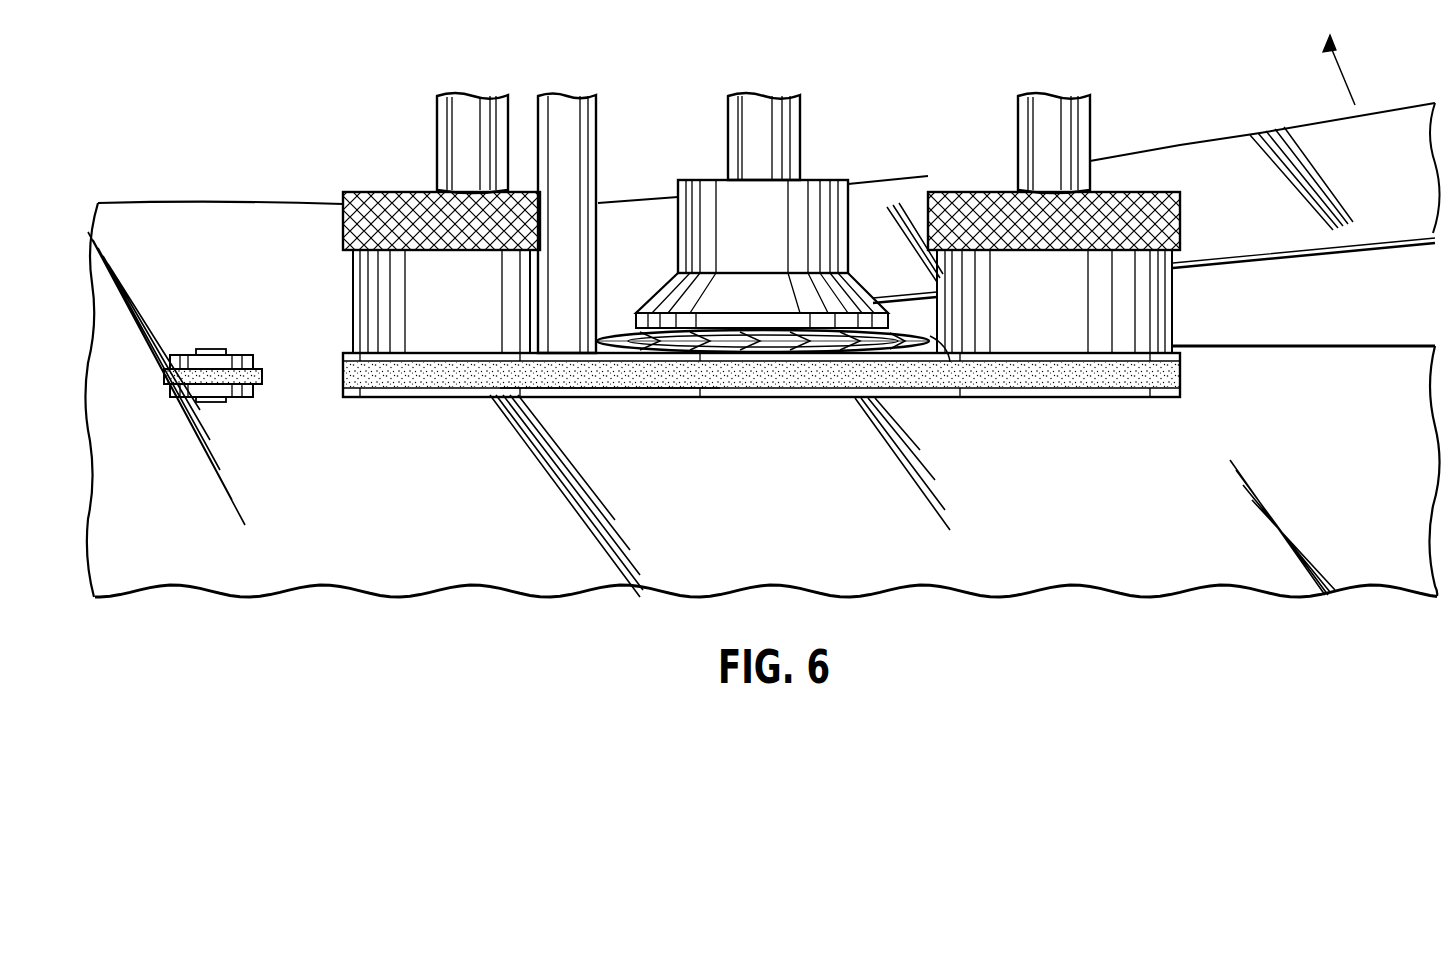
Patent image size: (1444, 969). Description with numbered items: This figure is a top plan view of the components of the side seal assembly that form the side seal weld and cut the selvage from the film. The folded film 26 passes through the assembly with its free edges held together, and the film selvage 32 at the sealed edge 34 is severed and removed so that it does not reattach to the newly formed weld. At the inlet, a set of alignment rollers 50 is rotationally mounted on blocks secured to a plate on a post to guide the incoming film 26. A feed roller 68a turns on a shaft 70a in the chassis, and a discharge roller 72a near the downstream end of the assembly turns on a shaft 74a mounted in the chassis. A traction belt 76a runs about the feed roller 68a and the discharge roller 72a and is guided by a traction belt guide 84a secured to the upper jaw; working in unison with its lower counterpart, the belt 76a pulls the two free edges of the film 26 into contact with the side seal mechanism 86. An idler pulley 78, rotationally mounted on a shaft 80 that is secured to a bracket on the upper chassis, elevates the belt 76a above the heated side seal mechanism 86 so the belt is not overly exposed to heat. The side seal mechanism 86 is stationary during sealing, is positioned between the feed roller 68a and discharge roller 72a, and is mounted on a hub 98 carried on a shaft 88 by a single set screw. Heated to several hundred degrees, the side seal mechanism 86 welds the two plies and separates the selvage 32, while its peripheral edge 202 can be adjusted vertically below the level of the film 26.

The film 26 is at (352, 492).
The film selvage 32 is at (1389, 121).
The sealed edge 34 is at (1297, 345).
The alignment rollers 50 is at (243, 402).
The feed roller 68a is at (352, 316).
The shaft 70a is at (438, 149).
The discharge roller 72a is at (1173, 320).
The shaft 74a is at (1018, 142).
The traction belt 76a is at (745, 397).
The idler pulley 78 is at (572, 397).
The shaft 80 is at (596, 150).
The traction belt guide 84a is at (684, 397).
The side seal mechanism 86 is at (800, 350).
The shaft 88 is at (728, 150).
The hub 98 is at (678, 260).
The peripheral edge 202 is at (950, 362).